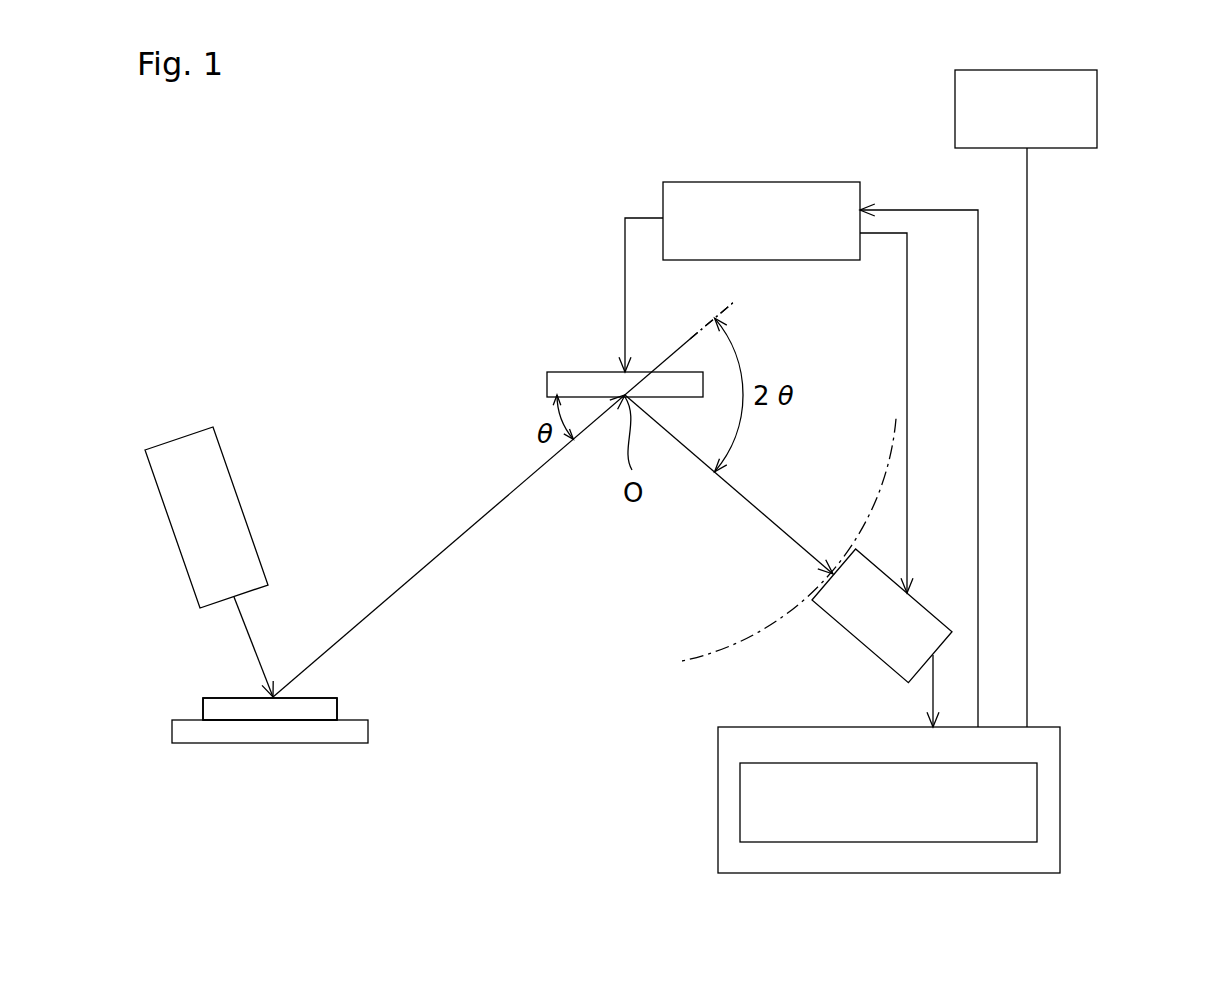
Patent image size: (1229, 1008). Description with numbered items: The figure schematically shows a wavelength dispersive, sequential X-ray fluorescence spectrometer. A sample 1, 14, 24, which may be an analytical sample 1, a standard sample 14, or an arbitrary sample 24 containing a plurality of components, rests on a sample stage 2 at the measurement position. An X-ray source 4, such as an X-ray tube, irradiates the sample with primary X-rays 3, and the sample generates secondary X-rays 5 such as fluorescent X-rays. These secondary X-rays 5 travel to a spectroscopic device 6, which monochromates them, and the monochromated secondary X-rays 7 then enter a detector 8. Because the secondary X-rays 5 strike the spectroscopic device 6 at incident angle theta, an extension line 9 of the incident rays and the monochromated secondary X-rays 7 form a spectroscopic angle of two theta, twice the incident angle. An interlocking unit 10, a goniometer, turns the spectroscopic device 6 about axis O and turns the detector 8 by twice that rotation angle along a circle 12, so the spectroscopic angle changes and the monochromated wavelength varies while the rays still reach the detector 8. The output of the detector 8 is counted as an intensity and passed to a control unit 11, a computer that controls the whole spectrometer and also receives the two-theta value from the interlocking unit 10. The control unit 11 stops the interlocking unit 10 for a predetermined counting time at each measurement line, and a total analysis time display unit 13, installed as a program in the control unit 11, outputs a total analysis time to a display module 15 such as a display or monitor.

The analytical sample 1 is at (338, 705).
The standard sample 14 is at (364, 711).
The arbitrary sample 24 is at (364, 711).
The sample stage 2 is at (368, 733).
The primary X-rays 3 is at (248, 630).
The X-ray source 4 is at (243, 503).
The secondary X-rays 5 is at (435, 557).
The spectroscopic device 6 is at (582, 370).
The monochromated secondary X-rays 7 is at (775, 523).
The detector 8 is at (857, 640).
The extension line 9 is at (733, 307).
The interlocking unit 10 is at (828, 260).
The control unit 11 is at (1060, 798).
The circle 12 is at (757, 637).
The total analysis time display unit 13 is at (740, 807).
The display module 15 is at (1098, 107).